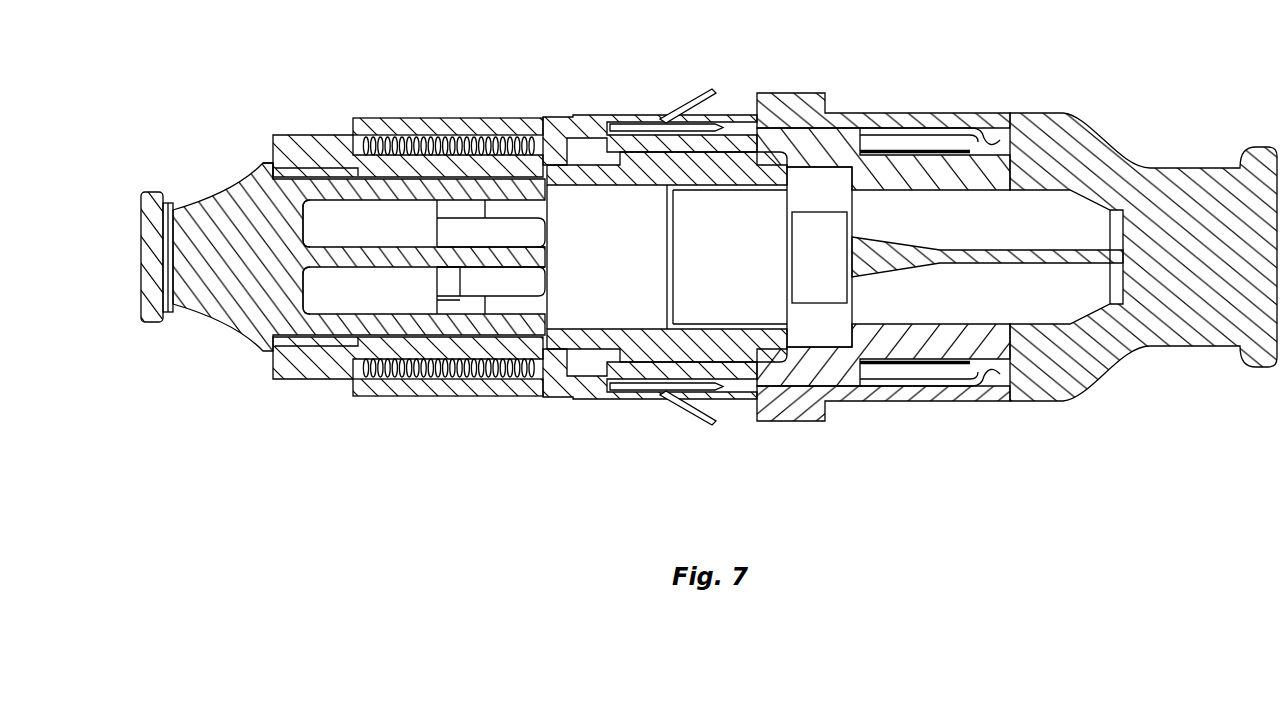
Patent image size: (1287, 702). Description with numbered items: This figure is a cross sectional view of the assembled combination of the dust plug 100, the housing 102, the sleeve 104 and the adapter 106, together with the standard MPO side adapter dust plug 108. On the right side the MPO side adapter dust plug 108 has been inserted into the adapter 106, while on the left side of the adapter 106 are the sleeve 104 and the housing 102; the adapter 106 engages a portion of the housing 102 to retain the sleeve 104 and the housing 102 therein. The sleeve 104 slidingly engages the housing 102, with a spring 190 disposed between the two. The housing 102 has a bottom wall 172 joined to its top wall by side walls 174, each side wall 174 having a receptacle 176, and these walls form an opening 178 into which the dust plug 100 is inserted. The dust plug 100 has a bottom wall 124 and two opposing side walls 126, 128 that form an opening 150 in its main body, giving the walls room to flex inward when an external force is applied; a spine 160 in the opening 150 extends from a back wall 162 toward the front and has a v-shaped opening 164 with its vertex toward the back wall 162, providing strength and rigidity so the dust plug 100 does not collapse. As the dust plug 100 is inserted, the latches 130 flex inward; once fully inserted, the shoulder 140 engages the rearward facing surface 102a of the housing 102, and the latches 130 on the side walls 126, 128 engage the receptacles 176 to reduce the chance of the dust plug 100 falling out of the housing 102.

The dust plug 100 is at (141, 232).
The housing 102 is at (290, 133).
The rearward facing surface 102a is at (273, 158).
The sleeve 104 is at (543, 117).
The adapter 106 is at (922, 113).
The MPO side adapter dust plug 108 is at (1097, 135).
The bottom wall 124 is at (367, 232).
The side wall 126 is at (552, 190).
The side wall 128 is at (552, 325).
The latches 130 is at (507, 118).
The shoulder 140 is at (266, 355).
The opening 150 is at (342, 300).
The spine 160 is at (420, 240).
The back wall 162 is at (303, 292).
The opening 164 is at (460, 268).
The bottom wall 172 is at (627, 265).
The side walls 174 is at (632, 185).
The receptacle 176 is at (805, 257).
The opening 178 is at (603, 194).
The spring 190 is at (412, 133).